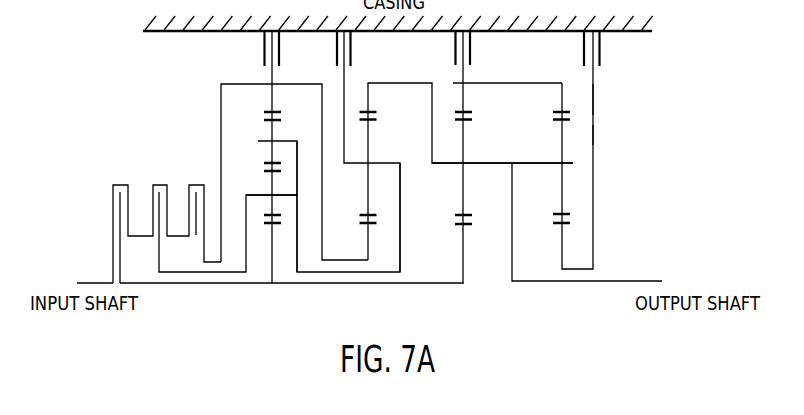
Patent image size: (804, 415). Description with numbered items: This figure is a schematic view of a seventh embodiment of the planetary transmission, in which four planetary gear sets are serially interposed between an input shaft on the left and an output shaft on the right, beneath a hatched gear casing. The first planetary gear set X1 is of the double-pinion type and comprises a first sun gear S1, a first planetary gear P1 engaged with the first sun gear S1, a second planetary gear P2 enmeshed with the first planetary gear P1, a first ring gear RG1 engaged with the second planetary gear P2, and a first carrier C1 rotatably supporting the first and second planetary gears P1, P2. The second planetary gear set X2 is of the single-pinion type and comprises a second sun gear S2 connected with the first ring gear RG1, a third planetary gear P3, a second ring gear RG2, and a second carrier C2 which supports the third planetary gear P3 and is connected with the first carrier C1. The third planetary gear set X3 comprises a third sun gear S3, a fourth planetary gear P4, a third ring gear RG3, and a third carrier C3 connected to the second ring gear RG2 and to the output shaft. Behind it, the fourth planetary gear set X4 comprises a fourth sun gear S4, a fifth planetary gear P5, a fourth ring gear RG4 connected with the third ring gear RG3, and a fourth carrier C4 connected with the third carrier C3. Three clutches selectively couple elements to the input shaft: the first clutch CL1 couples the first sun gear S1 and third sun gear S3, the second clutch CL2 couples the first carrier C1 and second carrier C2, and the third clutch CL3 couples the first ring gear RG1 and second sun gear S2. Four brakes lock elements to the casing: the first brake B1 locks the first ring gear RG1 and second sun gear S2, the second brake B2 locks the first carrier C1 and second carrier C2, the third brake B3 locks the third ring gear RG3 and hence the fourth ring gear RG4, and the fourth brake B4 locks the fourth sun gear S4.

The first brake B1 is at (262, 45).
The second brake B2 is at (352, 50).
The third brake B3 is at (471, 47).
The fourth brake B4 is at (601, 47).
The first ring gear RG1 is at (272, 99).
The second ring gear RG2 is at (368, 99).
The third ring gear RG3 is at (464, 99).
The fourth ring gear RG4 is at (593, 101).
The first planetary gear P1 is at (271, 180).
The second planetary gear P2 is at (271, 128).
The third planetary gear P3 is at (368, 139).
The fourth planetary gear P4 is at (464, 140).
The fifth planetary gear P5 is at (593, 138).
The first carrier C1 is at (297, 182).
The second carrier C2 is at (400, 172).
The third carrier C3 is at (477, 165).
The fourth carrier C4 is at (573, 163).
The first sun gear S1 is at (274, 233).
The second sun gear S2 is at (370, 233).
The third sun gear S3 is at (465, 248).
The fourth sun gear S4 is at (565, 248).
The first clutch CL1 is at (119, 184).
The second clutch CL2 is at (161, 184).
The third clutch CL3 is at (192, 184).
The first planetary gear set X1 is at (267, 243).
The second planetary gear set X2 is at (365, 233).
The third planetary gear set X3 is at (460, 233).
The fourth planetary gear set X4 is at (555, 233).